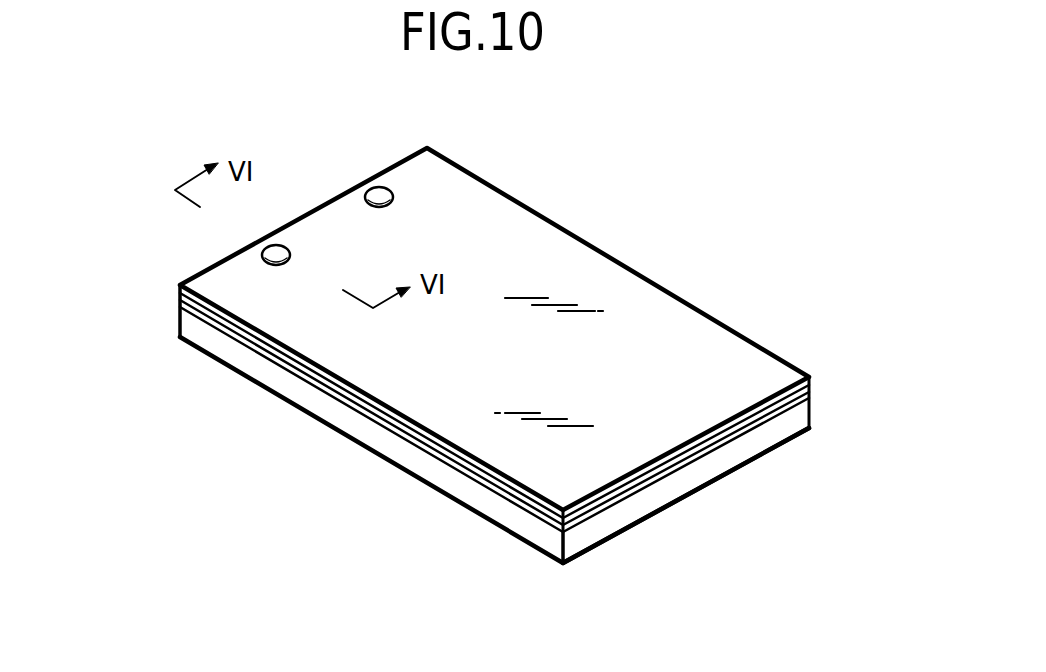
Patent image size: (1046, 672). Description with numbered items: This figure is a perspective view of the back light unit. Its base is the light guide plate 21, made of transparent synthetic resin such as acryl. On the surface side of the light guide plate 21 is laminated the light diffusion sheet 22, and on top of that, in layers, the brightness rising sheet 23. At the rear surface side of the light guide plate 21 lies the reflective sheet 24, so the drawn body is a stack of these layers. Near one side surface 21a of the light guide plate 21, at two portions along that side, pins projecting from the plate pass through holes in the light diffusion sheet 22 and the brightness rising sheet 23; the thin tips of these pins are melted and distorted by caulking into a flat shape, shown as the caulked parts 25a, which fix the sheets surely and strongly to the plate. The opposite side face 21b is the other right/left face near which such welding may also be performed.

The light guide plate 21 is at (813, 408).
The one side surface of the light guide plate 21a is at (180, 320).
The side face of the light guide plate 21b is at (645, 500).
The light diffusion sheet 22 is at (813, 382).
The brightness rising sheet 23 is at (563, 260).
The reflective sheet 24 is at (745, 468).
The part distorted by caulking 25a is at (275, 250).